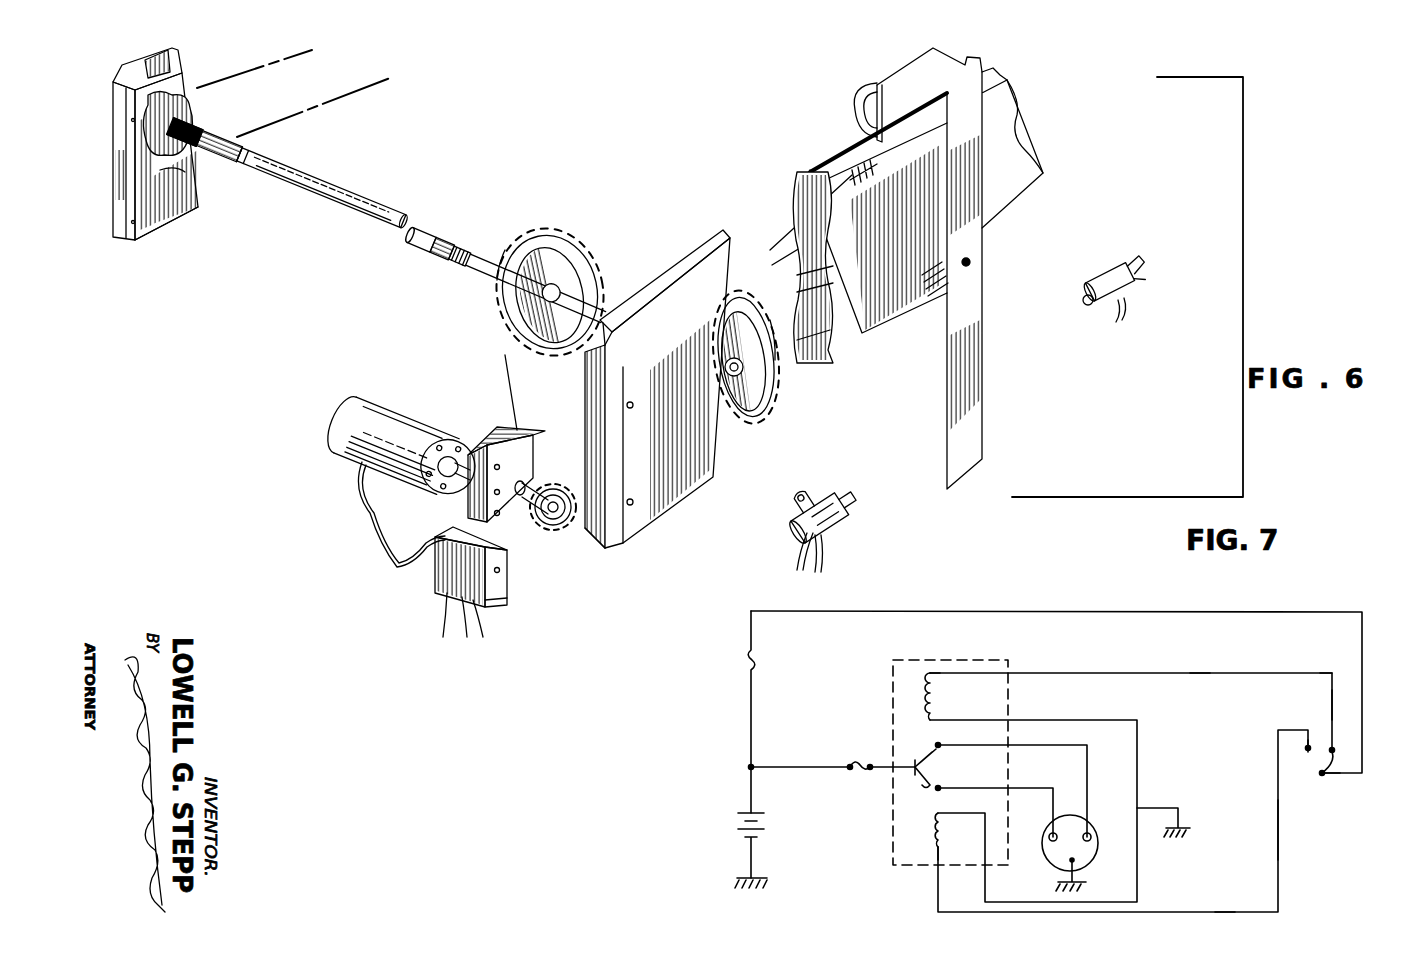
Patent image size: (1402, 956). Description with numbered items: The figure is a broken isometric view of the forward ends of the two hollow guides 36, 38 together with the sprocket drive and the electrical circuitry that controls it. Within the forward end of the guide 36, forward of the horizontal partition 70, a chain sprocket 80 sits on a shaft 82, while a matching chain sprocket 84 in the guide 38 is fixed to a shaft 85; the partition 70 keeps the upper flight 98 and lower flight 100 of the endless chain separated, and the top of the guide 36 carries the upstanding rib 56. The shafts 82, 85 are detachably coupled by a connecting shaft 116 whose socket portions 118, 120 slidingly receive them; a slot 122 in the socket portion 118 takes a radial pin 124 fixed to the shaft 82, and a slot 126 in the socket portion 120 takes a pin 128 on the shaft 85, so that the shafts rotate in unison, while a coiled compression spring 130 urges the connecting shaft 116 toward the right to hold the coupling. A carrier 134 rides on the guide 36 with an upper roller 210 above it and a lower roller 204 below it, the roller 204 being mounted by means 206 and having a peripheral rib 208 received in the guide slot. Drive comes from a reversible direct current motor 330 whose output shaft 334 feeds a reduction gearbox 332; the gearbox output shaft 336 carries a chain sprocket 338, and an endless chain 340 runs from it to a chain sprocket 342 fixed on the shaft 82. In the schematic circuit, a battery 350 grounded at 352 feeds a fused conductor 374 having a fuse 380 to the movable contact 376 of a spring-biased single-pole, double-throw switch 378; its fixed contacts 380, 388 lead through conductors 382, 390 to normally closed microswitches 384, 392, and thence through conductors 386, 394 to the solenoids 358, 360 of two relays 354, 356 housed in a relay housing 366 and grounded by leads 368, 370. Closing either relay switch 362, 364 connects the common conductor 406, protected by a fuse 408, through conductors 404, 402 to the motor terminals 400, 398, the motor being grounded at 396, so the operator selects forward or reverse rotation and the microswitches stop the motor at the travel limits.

In FIG. 6, the guide 36 is at (705, 470).
In FIG. 6, the guide 38 is at (198, 218).
In FIG. 6, the rib 56 is at (658, 285).
In FIG. 6, the horizontal partition 70 is at (835, 300).
In FIG. 6, the chain sprocket 80 is at (745, 420).
In FIG. 6, the shaft 82 is at (500, 258).
In FIG. 6, the chain sprocket 84 is at (112, 80).
In FIG. 6, the shaft 85 is at (212, 180).
In FIG. 6, the upper flight 98 is at (797, 265).
In FIG. 6, the lower flight 100 is at (780, 360).
In FIG. 6, the connecting shaft 116 is at (331, 168).
In FIG. 6, the socket portion 118 is at (455, 214).
In FIG. 6, the socket portion 120 is at (293, 142).
In FIG. 6, the slot 122 is at (399, 260).
In FIG. 6, the pin 124 is at (440, 277).
In FIG. 6, the slot 126 is at (232, 111).
In FIG. 6, the pin 128 is at (196, 89).
In FIG. 6, the coiled compression spring 130 is at (182, 228).
In FIG. 6, the carrier 134 is at (972, 412).
In FIG. 6, the lower roller 204 is at (946, 288).
In FIG. 6, the means 206 is at (970, 260).
In FIG. 6, the peripheral rib 208 is at (928, 300).
In FIG. 6, the upper roller 210 is at (852, 110).
In FIG. 6, the reversible direct current motor 330 is at (358, 418).
In FIG. 7, the reversible direct current motor 330 is at (1098, 845).
In FIG. 6, the reduction gearbox 332 is at (500, 430).
In FIG. 6, the output shaft 334 is at (457, 478).
In FIG. 6, the output shaft 336 is at (515, 500).
In FIG. 6, the chain sprocket 338 is at (575, 525).
In FIG. 6, the endless chain 340 is at (505, 370).
In FIG. 6, the chain sprocket 342 is at (590, 258).
In FIG. 7, the electrical battery 350 is at (737, 823).
In FIG. 7, the ground 352 is at (753, 870).
In FIG. 7, the electrical relay 354 is at (925, 690).
In FIG. 7, the electrical relay 356 is at (932, 845).
In FIG. 7, the solenoid 358 is at (929, 675).
In FIG. 7, the solenoid 360 is at (932, 830).
In FIG. 7, the solenoid-actuated switch 362 is at (930, 760).
In FIG. 7, the solenoid-actuated switch 364 is at (912, 780).
In FIG. 6, the relay housing 366 is at (440, 578).
In FIG. 7, the relay housing 366 is at (1010, 715).
In FIG. 7, the lead 368 is at (1140, 722).
In FIG. 7, the lead 370 is at (1138, 900).
In FIG. 7, the conductor 374 is at (1092, 611).
In FIG. 7, the movable contact 376 is at (1320, 774).
In FIG. 7, the single-pole, double-throw switch 378 is at (1330, 695).
In FIG. 7, the fuse 380 is at (753, 658).
In FIG. 6, the conductor 382 is at (1140, 292).
In FIG. 7, the conductor 382 is at (1282, 673).
In FIG. 6, the microswitch 384 is at (840, 515).
In FIG. 7, the microswitch 384 is at (1200, 672).
In FIG. 6, the conductor 386 is at (1118, 320).
In FIG. 7, the conductor 386 is at (1082, 673).
In FIG. 7, the fixed contact 388 is at (1308, 746).
In FIG. 7, the conductor 390 is at (1280, 860).
In FIG. 6, the microswitch 392 is at (1086, 306).
In FIG. 7, the microswitch 392 is at (1243, 887).
In FIG. 7, the conductor 394 is at (937, 912).
In FIG. 7, the ground 396 is at (1081, 879).
In FIG. 7, the motor terminal 398 is at (1045, 860).
In FIG. 7, the motor terminal 400 is at (1087, 830).
In FIG. 6, the conductor 402 is at (495, 608).
In FIG. 7, the conductor 402 is at (1010, 788).
In FIG. 6, the conductor 404 is at (500, 571).
In FIG. 7, the conductor 404 is at (1072, 748).
In FIG. 6, the common conductor 406 is at (443, 625).
In FIG. 7, the common conductor 406 is at (790, 772).
In FIG. 7, the fuse 408 is at (862, 762).